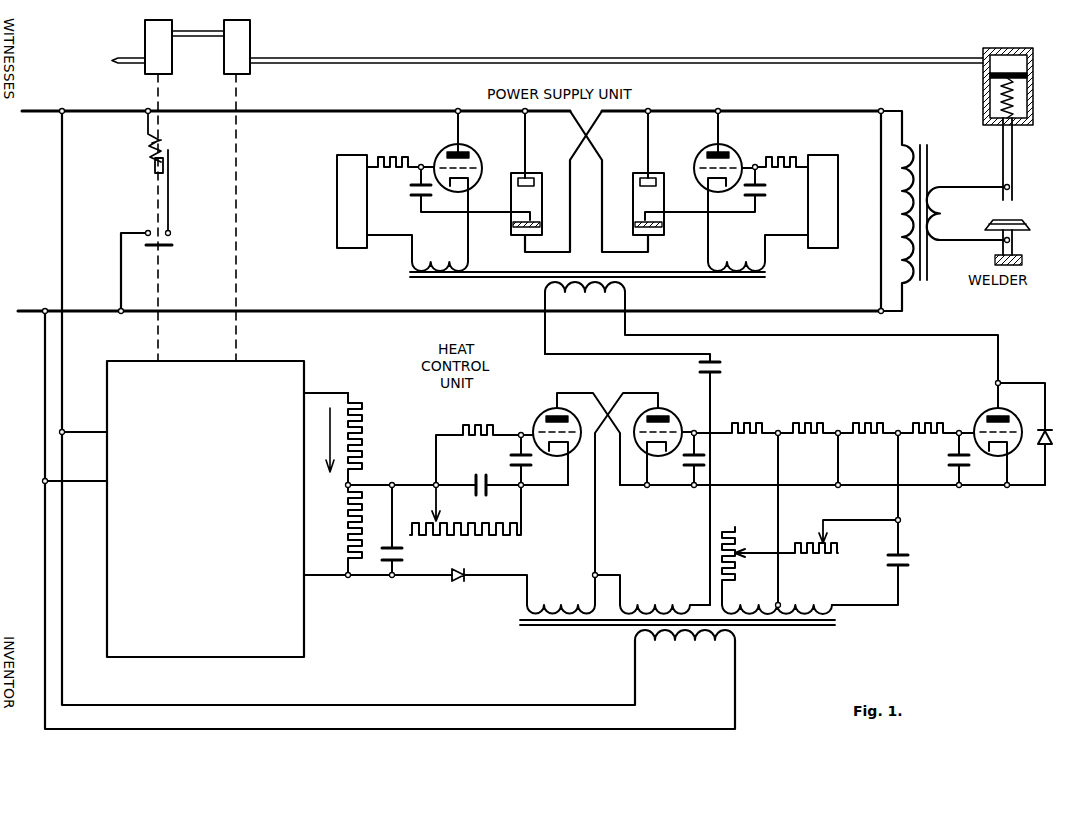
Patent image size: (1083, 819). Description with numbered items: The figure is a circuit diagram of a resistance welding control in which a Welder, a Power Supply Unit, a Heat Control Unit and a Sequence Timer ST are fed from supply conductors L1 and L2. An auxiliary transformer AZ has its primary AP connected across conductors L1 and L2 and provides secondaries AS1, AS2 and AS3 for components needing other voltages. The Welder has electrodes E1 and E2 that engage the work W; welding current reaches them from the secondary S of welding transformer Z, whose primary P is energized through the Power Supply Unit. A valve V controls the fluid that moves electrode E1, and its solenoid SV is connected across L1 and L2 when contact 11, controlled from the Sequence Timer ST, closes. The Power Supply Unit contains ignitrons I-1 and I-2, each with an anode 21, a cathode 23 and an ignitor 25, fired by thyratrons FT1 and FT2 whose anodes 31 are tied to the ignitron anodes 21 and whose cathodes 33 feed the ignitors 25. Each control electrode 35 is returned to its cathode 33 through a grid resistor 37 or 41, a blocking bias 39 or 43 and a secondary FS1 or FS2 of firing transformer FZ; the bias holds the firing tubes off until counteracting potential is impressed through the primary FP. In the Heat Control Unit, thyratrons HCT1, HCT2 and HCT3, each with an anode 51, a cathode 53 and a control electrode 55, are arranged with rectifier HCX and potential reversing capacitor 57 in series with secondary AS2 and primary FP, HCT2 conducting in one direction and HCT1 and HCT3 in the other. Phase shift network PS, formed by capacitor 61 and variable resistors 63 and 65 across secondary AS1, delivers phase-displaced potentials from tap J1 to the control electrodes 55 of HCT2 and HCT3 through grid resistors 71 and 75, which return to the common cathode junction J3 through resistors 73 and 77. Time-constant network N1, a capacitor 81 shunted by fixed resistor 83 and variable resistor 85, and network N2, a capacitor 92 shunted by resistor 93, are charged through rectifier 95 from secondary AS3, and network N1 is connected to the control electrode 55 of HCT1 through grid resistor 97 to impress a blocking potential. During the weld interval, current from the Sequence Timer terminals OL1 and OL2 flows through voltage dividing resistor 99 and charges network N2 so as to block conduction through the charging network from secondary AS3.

The contact 11 is at (173, 244).
The anode 21 is at (535, 186).
The cathode 23 is at (516, 235).
The ignitor 25 is at (512, 222).
The anode 31 is at (450, 151).
The cathode 33 is at (588, 189).
The control electrode 35 is at (476, 186).
The grid resistor 37 is at (396, 157).
The blocking bias 39 is at (337, 198).
The grid resistor 41 is at (785, 157).
The blocking bias 43 is at (840, 161).
The anode 51 is at (570, 415).
The cathode 53 is at (557, 464).
The control electrode 55 is at (540, 427).
The potential reversing capacitor 57 is at (722, 373).
The capacitor 61 is at (909, 562).
The variable resistor 63 is at (812, 543).
The variable resistor 65 is at (736, 538).
The grid resistor 71 is at (757, 423).
The resistor 73 is at (818, 423).
The grid resistor 75 is at (936, 423).
The resistor 77 is at (876, 423).
The capacitor 81 is at (478, 474).
The fixed resistor 83 is at (500, 533).
The variable resistor 85 is at (445, 533).
The capacitor 92 is at (399, 530).
The resistor 93 is at (348, 531).
The rectifier 95 is at (452, 580).
The grid resistor 97 is at (463, 428).
The voltage dividing resistor 99 is at (362, 445).
The power supply conductor L1 is at (111, 110).
The power supply conductor L2 is at (78, 311).
The valve V is at (145, 44).
The solenoid SV is at (166, 155).
The firing tube FT1 is at (589, 186).
The firing tube FT2 is at (708, 157).
The ignitron I-1 is at (588, 181).
The ignitron I-2 is at (638, 173).
The firing transformer secondary FS1 is at (427, 259).
The firing transformer secondary FS2 is at (746, 259).
The firing transformer FZ is at (690, 278).
The firing transformer primary FP is at (607, 292).
The welding transformer primary P is at (906, 284).
The welding transformer Z is at (929, 150).
The welding transformer secondary S is at (940, 213).
The work W is at (1018, 221).
The electrode E1 is at (1013, 189).
The electrode E2 is at (1014, 240).
The sequence timer ST is at (205, 509).
The output terminal OL1 is at (315, 393).
The output terminal OL2 is at (315, 575).
The time-constant network N1 is at (475, 507).
The time-constant network N2 is at (375, 529).
The phase shift network PS is at (851, 570).
The heat control thyratron HCT1 is at (772, 430).
The heat control thyratron HCT2 is at (666, 408).
The heat control thyratron HCT3 is at (976, 408).
The rectifier HCX is at (1048, 428).
The intermediate tap J1 is at (778, 605).
The common junction J3 is at (838, 481).
The transformer secondary AS1 is at (815, 596).
The transformer secondary AS2 is at (664, 596).
The transformer secondary AS3 is at (562, 596).
The transformer AZ is at (800, 626).
The transformer primary AP is at (690, 640).